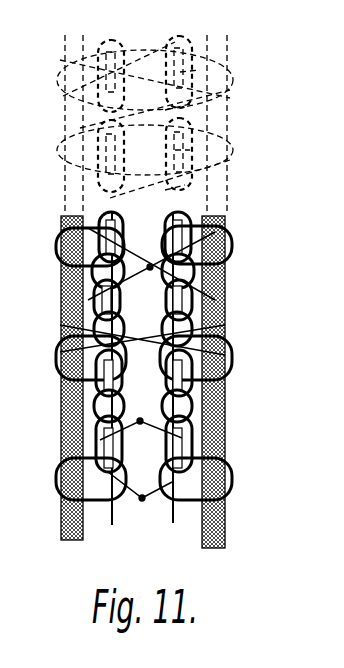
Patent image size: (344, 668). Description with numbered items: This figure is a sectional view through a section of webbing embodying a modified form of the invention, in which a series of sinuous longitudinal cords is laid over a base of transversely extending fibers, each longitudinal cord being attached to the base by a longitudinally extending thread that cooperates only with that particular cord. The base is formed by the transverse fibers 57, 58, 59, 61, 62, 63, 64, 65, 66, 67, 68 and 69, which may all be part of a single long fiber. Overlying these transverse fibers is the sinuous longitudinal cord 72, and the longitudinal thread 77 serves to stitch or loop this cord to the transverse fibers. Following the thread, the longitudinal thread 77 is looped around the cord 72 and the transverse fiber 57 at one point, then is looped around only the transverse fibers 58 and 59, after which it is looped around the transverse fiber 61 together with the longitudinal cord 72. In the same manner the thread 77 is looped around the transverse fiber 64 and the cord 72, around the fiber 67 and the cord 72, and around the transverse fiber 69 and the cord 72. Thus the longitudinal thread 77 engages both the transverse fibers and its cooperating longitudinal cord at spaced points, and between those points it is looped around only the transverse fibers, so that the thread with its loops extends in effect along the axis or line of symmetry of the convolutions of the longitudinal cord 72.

The transverse fiber 57 is at (165, 492).
The transverse fiber 58 is at (175, 439).
The transverse fiber 59 is at (172, 399).
The transverse fiber 61 is at (170, 370).
The transverse fiber 62 is at (172, 338).
The transverse fiber 63 is at (175, 284).
The transverse fiber 64 is at (172, 263).
The transverse fiber 65 is at (170, 239).
The transverse fiber 66 is at (170, 191).
The transverse fiber 67 is at (176, 151).
The transverse fiber 68 is at (175, 118).
The transverse fiber 69 is at (185, 73).
The longitudinal cord 72 is at (224, 529).
The longitudinal thread 77 is at (222, 470).